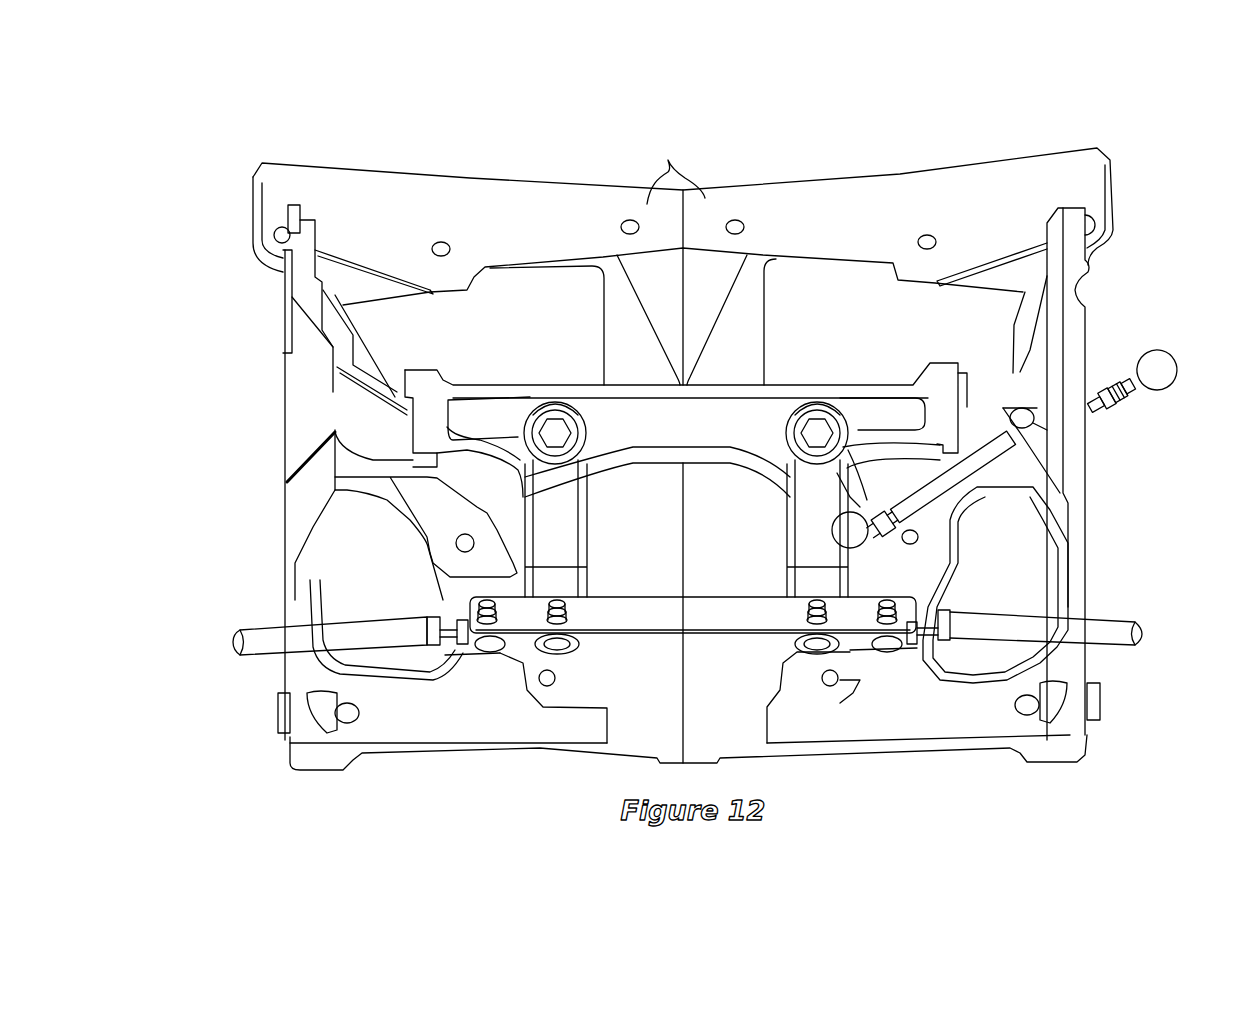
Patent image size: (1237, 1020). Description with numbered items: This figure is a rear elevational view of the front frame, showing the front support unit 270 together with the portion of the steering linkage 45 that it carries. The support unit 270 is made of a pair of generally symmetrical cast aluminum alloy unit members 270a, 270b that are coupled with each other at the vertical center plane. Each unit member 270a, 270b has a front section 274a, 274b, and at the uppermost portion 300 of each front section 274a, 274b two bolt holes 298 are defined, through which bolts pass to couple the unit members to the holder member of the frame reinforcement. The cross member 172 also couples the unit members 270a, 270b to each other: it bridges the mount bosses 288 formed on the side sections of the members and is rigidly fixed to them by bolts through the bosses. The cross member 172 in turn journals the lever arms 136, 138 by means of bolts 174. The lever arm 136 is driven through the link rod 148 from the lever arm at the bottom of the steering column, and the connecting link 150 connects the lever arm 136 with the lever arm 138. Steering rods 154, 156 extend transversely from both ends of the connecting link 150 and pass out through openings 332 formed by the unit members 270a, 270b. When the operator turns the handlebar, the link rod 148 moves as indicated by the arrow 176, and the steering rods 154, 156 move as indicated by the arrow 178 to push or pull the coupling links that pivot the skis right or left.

The front support unit 270 is at (1033, 150).
The unit member 270a is at (837, 197).
The unit member 270b is at (473, 177).
The front section 274a is at (1077, 163).
The front section 274b is at (310, 177).
The bolt holes 298 is at (432, 242).
The uppermost portion 300 is at (674, 168).
The cross member 172 is at (600, 412).
The bolts 174 is at (550, 430).
The mount bosses 288 is at (350, 432).
The openings 332 is at (337, 540).
The arrow 178 is at (269, 620).
The arrow 176 is at (1113, 437).
The lever arm 138 is at (568, 538).
The lever arm 136 is at (817, 562).
The link rod 148 is at (973, 473).
The steering linkage 45 is at (640, 645).
The connecting link 150 is at (758, 620).
The steering rod 154 is at (1132, 643).
The steering rod 156 is at (268, 655).